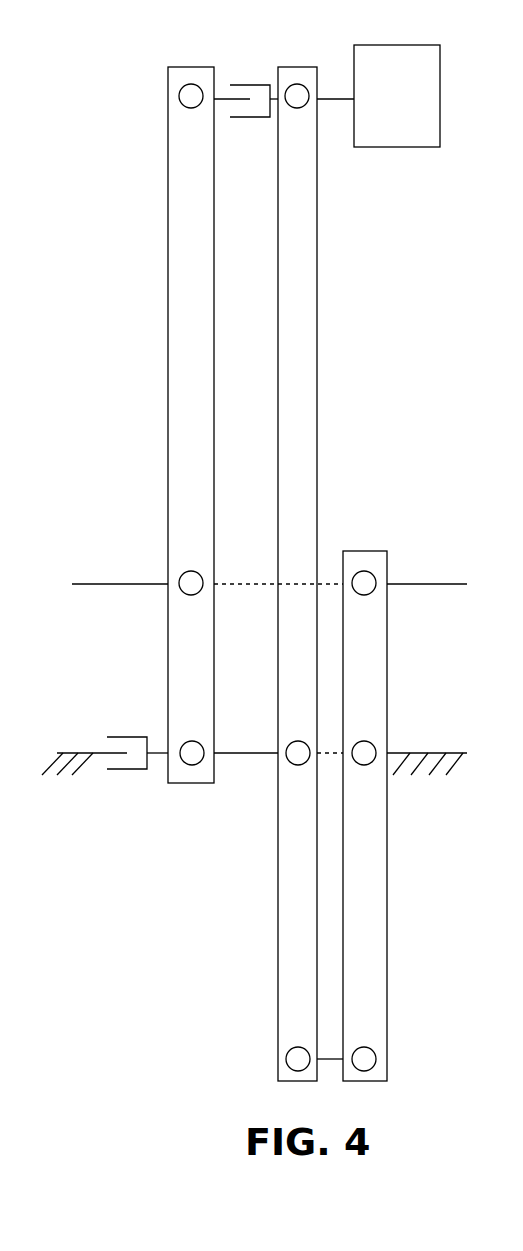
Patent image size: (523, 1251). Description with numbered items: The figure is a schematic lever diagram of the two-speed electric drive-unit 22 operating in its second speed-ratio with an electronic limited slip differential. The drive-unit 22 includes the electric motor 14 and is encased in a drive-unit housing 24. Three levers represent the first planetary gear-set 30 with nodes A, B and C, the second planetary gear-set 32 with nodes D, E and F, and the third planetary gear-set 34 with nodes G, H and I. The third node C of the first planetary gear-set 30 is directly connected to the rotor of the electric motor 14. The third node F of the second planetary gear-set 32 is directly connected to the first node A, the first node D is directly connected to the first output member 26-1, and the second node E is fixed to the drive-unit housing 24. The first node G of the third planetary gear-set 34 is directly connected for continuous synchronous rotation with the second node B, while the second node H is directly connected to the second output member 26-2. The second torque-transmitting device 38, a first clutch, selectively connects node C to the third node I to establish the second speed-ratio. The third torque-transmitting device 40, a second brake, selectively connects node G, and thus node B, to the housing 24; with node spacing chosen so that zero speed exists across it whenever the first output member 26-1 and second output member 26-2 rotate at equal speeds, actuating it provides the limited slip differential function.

The electric motor 14 is at (385, 147).
The electric drive-unit 22 is at (130, 216).
The drive-unit housing 24 is at (80, 774).
The first output member 26-1 is at (435, 583).
The second output member 26-2 is at (100, 583).
The first planetary gear-set 30 is at (286, 342).
The second planetary gear-set 32 is at (356, 901).
The third planetary gear-set 34 is at (179, 342).
The second torque-transmitting device 38 is at (246, 83).
The third torque-transmitting device 40 is at (130, 737).
The first node A is at (293, 1055).
The second node B is at (295, 748).
The third node C is at (297, 90).
The first node D is at (362, 578).
The second node E is at (363, 748).
The third node F is at (368, 1056).
The first node G is at (190, 762).
The second node H is at (188, 578).
The third node I is at (190, 90).